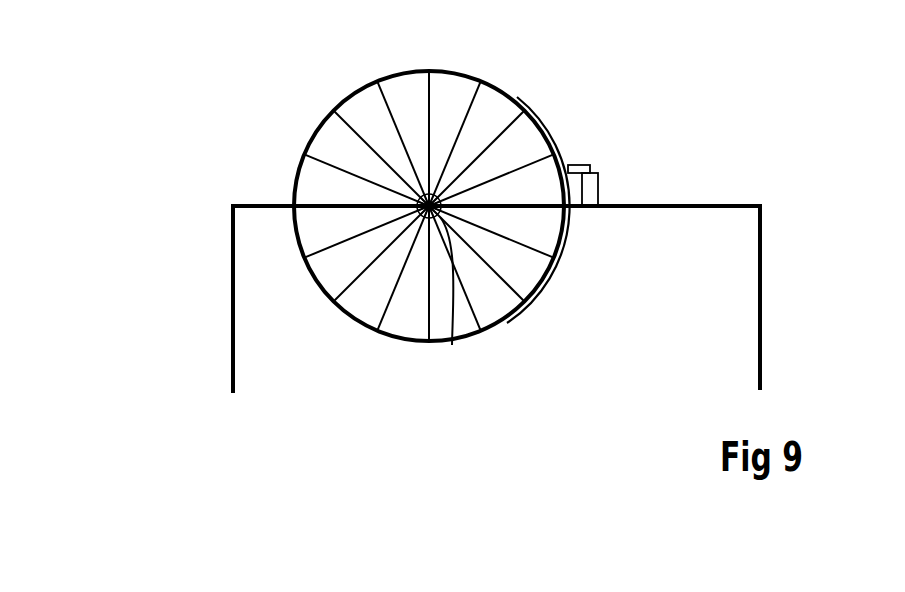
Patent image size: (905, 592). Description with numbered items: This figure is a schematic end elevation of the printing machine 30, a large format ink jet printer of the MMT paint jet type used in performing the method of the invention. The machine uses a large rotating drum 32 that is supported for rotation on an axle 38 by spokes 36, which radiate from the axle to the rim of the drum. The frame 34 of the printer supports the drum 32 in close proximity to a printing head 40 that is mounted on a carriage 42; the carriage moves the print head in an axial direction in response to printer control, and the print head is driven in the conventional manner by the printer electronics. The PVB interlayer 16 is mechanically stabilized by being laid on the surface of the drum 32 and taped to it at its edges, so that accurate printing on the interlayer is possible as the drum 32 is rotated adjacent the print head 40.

The printing machine 30 is at (170, 452).
The rotating drum 32 is at (320, 125).
The frame 34 is at (232, 300).
The spokes 36 is at (430, 100).
The axle 38 is at (452, 345).
The PVB interlayer 16 is at (560, 253).
The printing head 40 is at (590, 163).
The carriage 42 is at (598, 189).